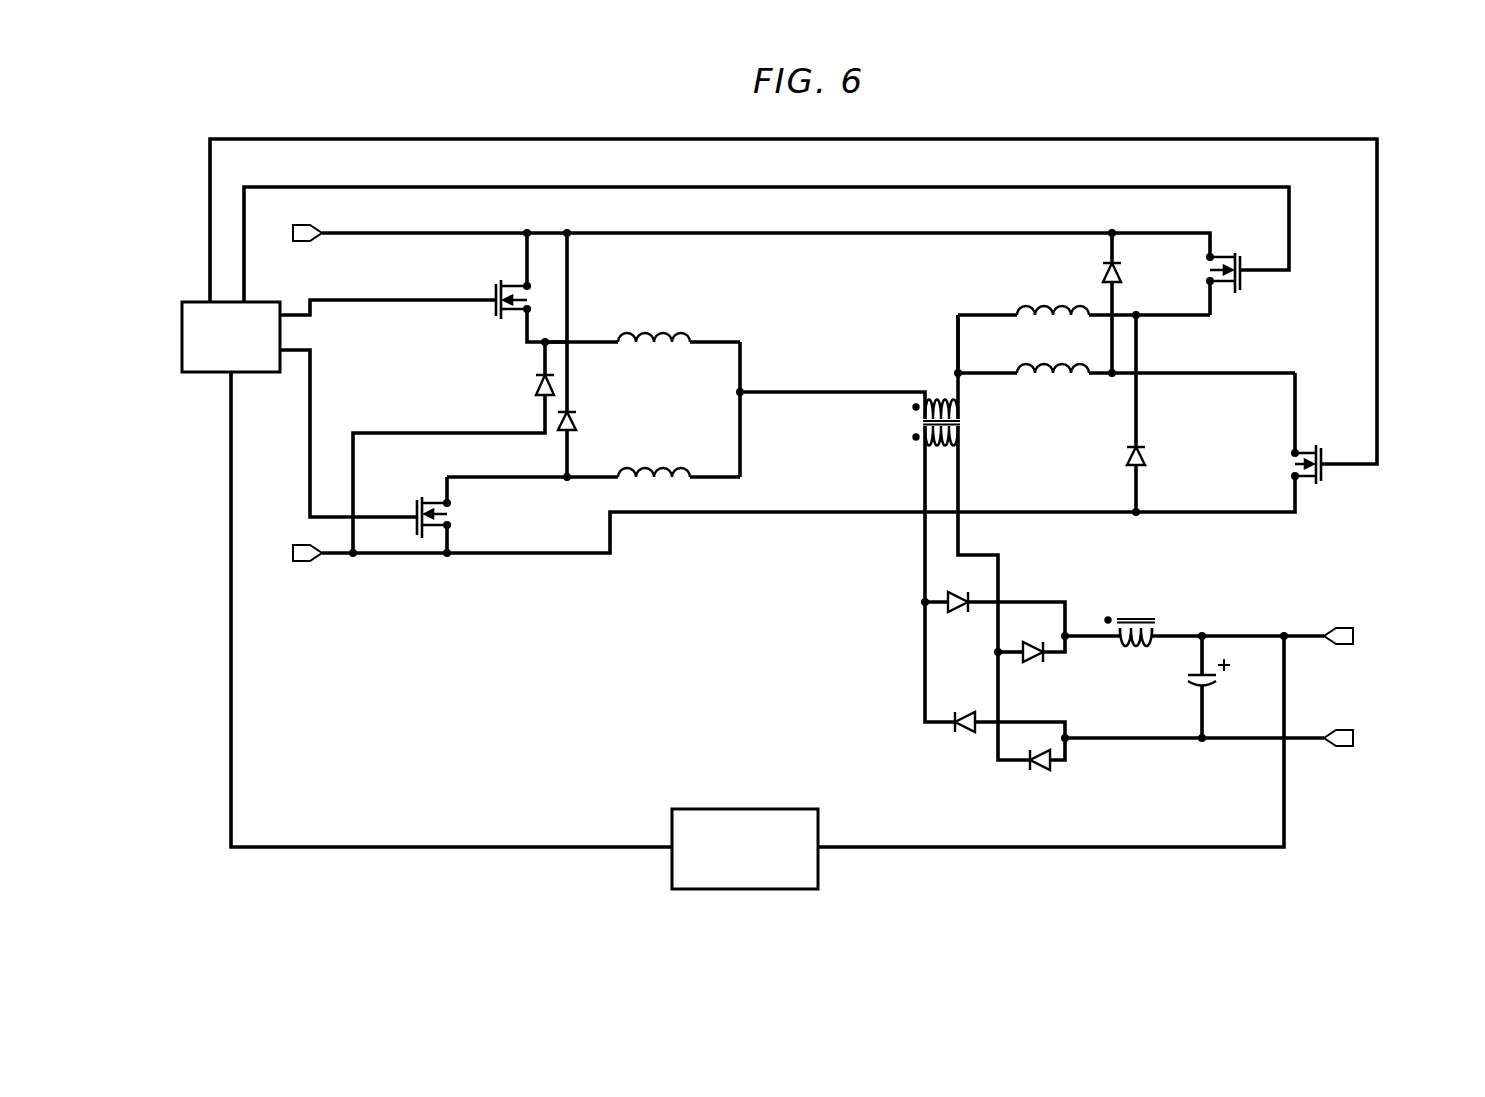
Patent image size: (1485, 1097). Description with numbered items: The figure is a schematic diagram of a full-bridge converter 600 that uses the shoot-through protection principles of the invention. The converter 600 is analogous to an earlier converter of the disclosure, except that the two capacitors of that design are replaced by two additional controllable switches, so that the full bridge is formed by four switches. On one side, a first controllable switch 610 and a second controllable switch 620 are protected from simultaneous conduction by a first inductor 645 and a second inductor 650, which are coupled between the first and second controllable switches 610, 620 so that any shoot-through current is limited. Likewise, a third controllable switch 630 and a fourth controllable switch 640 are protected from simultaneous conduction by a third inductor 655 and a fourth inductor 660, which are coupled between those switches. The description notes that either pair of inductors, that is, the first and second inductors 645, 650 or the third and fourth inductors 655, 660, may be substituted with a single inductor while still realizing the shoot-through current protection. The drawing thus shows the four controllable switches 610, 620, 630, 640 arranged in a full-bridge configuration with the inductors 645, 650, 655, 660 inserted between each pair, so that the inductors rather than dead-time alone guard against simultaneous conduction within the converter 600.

The full-bridge converter 600 is at (1292, 122).
The first controllable switch 610 is at (496, 284).
The second controllable switch 620 is at (417, 510).
The third controllable switch 630 is at (1240, 262).
The fourth controllable switch 640 is at (1321, 461).
The first inductor 645 is at (660, 333).
The second inductor 650 is at (660, 468).
The third inductor 655 is at (1056, 306).
The fourth inductor 660 is at (1056, 364).